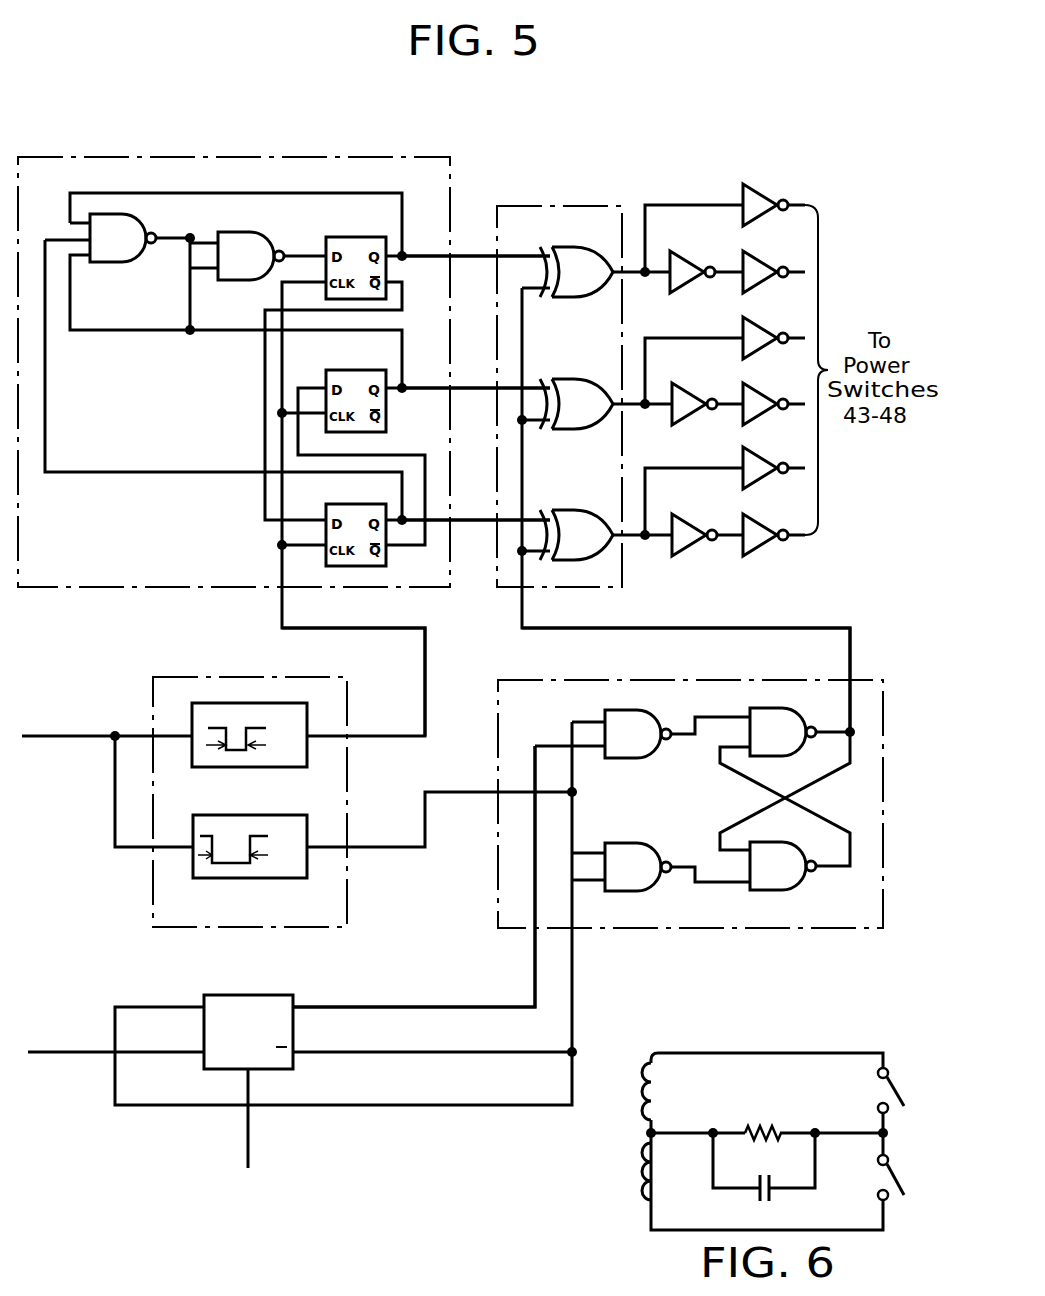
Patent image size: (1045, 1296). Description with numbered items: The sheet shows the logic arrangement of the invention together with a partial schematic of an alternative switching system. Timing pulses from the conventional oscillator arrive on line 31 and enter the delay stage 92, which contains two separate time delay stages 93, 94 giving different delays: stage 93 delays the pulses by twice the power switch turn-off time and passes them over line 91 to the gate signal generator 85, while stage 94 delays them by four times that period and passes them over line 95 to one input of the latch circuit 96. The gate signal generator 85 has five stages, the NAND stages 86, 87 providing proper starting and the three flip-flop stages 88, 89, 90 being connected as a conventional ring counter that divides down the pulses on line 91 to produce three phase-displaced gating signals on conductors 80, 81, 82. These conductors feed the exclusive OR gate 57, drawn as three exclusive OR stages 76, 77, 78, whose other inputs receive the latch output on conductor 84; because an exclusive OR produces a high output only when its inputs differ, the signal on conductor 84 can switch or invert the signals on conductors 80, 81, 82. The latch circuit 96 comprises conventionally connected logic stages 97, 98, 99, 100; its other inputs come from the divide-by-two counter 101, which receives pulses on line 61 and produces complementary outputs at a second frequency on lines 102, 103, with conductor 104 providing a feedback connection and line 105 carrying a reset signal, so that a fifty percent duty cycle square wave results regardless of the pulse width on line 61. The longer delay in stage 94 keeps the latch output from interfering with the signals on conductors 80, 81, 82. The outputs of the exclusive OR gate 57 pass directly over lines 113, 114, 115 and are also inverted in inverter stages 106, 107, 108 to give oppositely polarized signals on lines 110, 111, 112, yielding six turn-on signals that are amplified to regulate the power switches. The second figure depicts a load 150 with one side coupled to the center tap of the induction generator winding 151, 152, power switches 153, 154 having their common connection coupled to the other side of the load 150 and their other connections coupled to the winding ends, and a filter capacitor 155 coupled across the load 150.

In FIG. 5, the line 31 is at (78, 736).
In FIG. 5, the exclusive OR gate 57 is at (605, 197).
In FIG. 5, the line 61 is at (80, 1052).
In FIG. 5, the exclusive OR stage 76 is at (576, 259).
In FIG. 5, the exclusive OR stage 77 is at (576, 391).
In FIG. 5, the exclusive OR stage 78 is at (576, 522).
In FIG. 5, the conductor 80 is at (472, 259).
In FIG. 5, the conductor 81 is at (472, 391).
In FIG. 5, the conductor 82 is at (472, 522).
In FIG. 5, the conductor 84 is at (588, 628).
In FIG. 5, the gate signal generator 85 is at (426, 152).
In FIG. 5, the NAND stage 86 is at (123, 253).
In FIG. 5, the NAND stage 87 is at (251, 271).
In FIG. 5, the flip-flop stage 88 is at (356, 255).
In FIG. 5, the flip-flop stage 89 is at (356, 388).
In FIG. 5, the flip-flop stage 90 is at (356, 522).
In FIG. 5, the line 91 is at (373, 628).
In FIG. 5, the delay stage 92 is at (352, 674).
In FIG. 5, the time delay stage 93 is at (280, 767).
In FIG. 5, the time delay stage 94 is at (222, 878).
In FIG. 5, the line 95 is at (385, 850).
In FIG. 5, the latch circuit 96 is at (730, 674).
In FIG. 5, the logic stage 97 is at (638, 720).
In FIG. 5, the logic stage 98 is at (638, 854).
In FIG. 5, the logic stage 99 is at (783, 719).
In FIG. 5, the logic stage 100 is at (783, 854).
In FIG. 5, the divide-by-two counter 101 is at (248, 1019).
In FIG. 5, the line 102 is at (370, 1007).
In FIG. 5, the line 103 is at (370, 1052).
In FIG. 5, the conductor 104 is at (370, 1105).
In FIG. 5, the line 105 is at (288, 1143).
In FIG. 5, the inverter stage 106 is at (705, 266).
In FIG. 5, the inverter stage 107 is at (705, 397).
In FIG. 5, the inverter stage 108 is at (705, 530).
In FIG. 5, the line 110 is at (720, 278).
In FIG. 5, the line 111 is at (720, 409).
In FIG. 5, the line 112 is at (722, 541).
In FIG. 5, the line 113 is at (695, 205).
In FIG. 5, the line 114 is at (695, 338).
In FIG. 5, the line 115 is at (690, 468).
In FIG. 6, the load 150 is at (764, 1120).
In FIG. 6, the induction generator winding 151 is at (678, 1119).
In FIG. 6, the induction generator winding 152 is at (680, 1208).
In FIG. 6, the power switch 153 is at (884, 1093).
In FIG. 6, the power switch 154 is at (888, 1178).
In FIG. 6, the filter capacitor 155 is at (764, 1180).